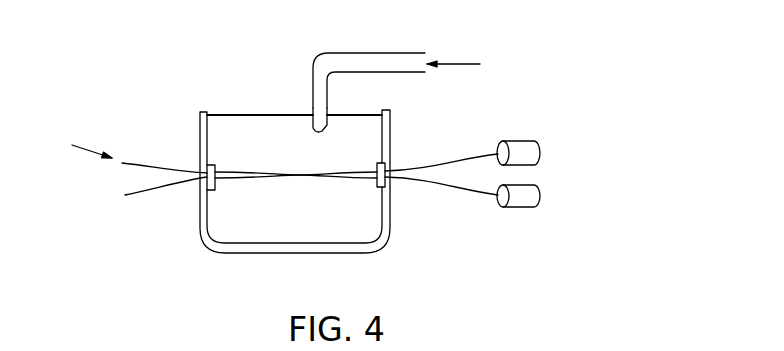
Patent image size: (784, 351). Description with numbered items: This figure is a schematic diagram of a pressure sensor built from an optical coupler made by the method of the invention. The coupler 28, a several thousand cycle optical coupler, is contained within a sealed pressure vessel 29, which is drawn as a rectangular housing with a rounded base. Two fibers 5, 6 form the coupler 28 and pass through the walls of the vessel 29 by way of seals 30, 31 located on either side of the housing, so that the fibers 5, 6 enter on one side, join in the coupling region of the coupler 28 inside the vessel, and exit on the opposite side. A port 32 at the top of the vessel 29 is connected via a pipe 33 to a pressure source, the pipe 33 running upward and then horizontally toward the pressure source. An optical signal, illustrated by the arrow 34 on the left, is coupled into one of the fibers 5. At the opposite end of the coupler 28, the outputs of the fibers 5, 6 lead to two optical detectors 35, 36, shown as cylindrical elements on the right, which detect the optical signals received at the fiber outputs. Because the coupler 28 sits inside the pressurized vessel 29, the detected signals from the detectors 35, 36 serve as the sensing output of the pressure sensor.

The fiber 5 is at (162, 167).
The fiber 6 is at (157, 190).
The coupler 28 is at (300, 172).
The sealed pressure vessel 29 is at (202, 145).
The seal 30 is at (205, 190).
The seal 31 is at (380, 187).
The port 32 is at (312, 125).
The pipe 33 is at (387, 62).
The arrow 34 is at (88, 150).
The optical detector 35 is at (518, 207).
The optical detector 36 is at (535, 142).